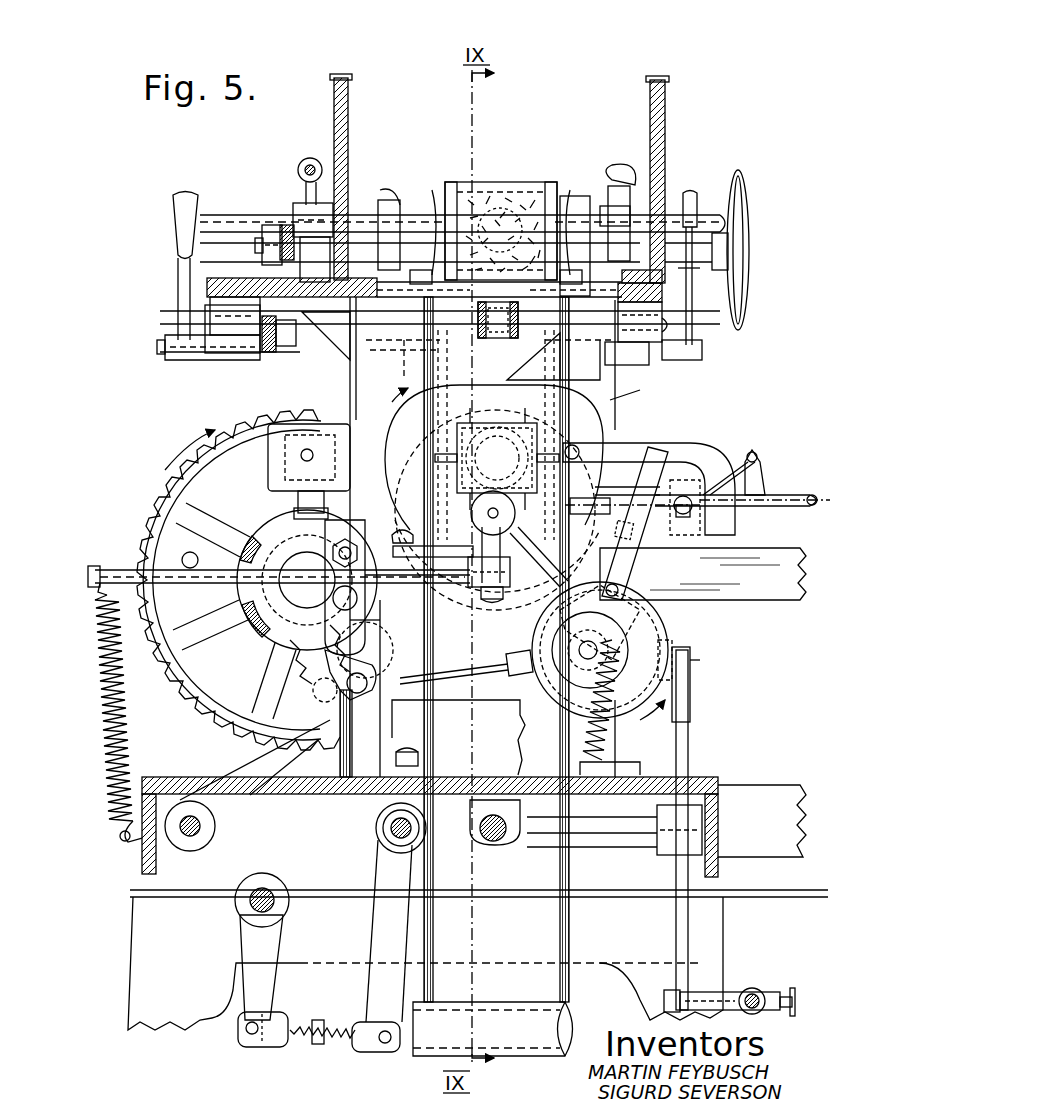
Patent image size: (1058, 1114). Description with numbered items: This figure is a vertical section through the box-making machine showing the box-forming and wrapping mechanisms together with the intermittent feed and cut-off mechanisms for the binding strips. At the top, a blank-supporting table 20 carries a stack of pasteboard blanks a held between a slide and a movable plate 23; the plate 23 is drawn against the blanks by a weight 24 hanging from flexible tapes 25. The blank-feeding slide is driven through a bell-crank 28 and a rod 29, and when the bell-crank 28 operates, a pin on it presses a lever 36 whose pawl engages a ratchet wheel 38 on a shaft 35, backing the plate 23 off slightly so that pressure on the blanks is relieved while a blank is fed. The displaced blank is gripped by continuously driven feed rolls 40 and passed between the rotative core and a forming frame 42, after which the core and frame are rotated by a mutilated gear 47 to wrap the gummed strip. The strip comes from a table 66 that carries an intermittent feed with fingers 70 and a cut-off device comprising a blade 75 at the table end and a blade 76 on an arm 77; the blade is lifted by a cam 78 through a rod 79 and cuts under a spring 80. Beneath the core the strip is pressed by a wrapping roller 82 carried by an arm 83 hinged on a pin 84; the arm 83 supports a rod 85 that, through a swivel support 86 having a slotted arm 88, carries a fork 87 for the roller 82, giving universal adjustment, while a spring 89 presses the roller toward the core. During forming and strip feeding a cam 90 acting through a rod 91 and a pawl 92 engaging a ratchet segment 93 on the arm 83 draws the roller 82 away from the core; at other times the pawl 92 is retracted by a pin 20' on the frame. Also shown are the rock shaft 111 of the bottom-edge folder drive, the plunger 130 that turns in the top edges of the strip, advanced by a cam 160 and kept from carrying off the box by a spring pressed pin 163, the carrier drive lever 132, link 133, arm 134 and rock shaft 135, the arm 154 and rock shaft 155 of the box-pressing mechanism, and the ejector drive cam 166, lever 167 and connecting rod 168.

The blank-supporting table 20 is at (664, 317).
The pin 20' is at (374, 650).
The movable plate 23 is at (548, 185).
The pasteboard blanks a is at (508, 190).
The weight 24 is at (570, 1020).
The flexible tapes 25 is at (570, 368).
The bell-crank 28 is at (310, 196).
The rod 29 is at (300, 165).
The shaft 35 is at (712, 240).
The lever 36 is at (285, 215).
The ratchet wheel 38 is at (270, 230).
The feed rolls 40 is at (482, 328).
The forming frame 42 is at (585, 404).
The mutilated gear 47 is at (170, 500).
The table 66 is at (785, 600).
The fingers 70 is at (726, 493).
The blade 75 is at (626, 523).
The blade 76 is at (632, 496).
The arm 77 is at (645, 435).
The cam 78 is at (555, 640).
The rod 79 is at (670, 507).
The spring 80 is at (598, 735).
The wrapping roller 82 is at (519, 539).
The arm 83 is at (325, 598).
The pin 84 is at (355, 599).
The rod 85 is at (145, 568).
The swivel support 86 is at (486, 590).
The fork 87 is at (506, 597).
The arm 88 is at (462, 482).
The spring 89 is at (98, 672).
The cam 90 is at (548, 700).
The rod 91 is at (490, 668).
The pawl 92 is at (340, 678).
The ratchet segment 93 is at (300, 652).
The rock shaft 111 is at (500, 838).
The plunger 130 is at (272, 475).
The lever 132 is at (385, 864).
The link 133 is at (345, 1025).
The arm 134 is at (262, 988).
The rock shaft 135 is at (272, 892).
The arm 154 is at (245, 758).
The rock shaft 155 is at (200, 832).
The cam 160 is at (243, 600).
The spring pressed pin 163 is at (329, 460).
The cam 166 is at (655, 614).
The lever 167 is at (678, 920).
The connecting rod 168 is at (762, 992).